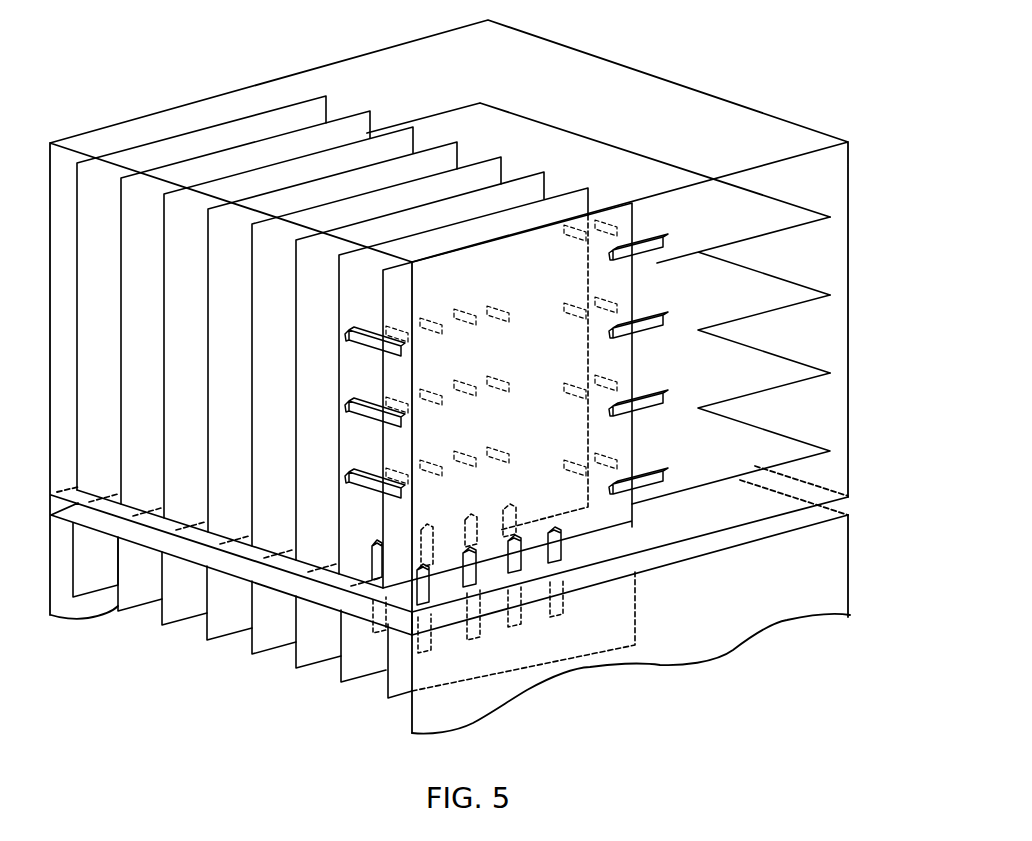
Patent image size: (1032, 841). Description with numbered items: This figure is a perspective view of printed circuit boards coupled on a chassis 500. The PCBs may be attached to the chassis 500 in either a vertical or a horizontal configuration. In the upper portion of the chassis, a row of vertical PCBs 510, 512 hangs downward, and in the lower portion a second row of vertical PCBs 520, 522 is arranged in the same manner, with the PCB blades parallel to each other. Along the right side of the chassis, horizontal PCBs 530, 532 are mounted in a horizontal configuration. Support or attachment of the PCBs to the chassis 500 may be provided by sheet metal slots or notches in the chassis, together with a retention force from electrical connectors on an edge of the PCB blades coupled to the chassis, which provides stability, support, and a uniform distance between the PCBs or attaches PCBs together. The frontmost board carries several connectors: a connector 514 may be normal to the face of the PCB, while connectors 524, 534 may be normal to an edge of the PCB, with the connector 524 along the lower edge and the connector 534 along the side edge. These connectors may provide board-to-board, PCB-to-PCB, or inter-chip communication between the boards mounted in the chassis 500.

The chassis 500 is at (681, 83).
The vertical printed circuit board 510 is at (182, 157).
The vertical printed circuit board 512 is at (268, 163).
The connector 514 is at (365, 490).
The vertical printed circuit board 520 is at (180, 624).
The vertical printed circuit board 522 is at (235, 638).
The connector 524 is at (479, 588).
The horizontal printed circuit board 530 is at (848, 220).
The horizontal printed circuit board 532 is at (848, 296).
The connector 534 is at (627, 497).